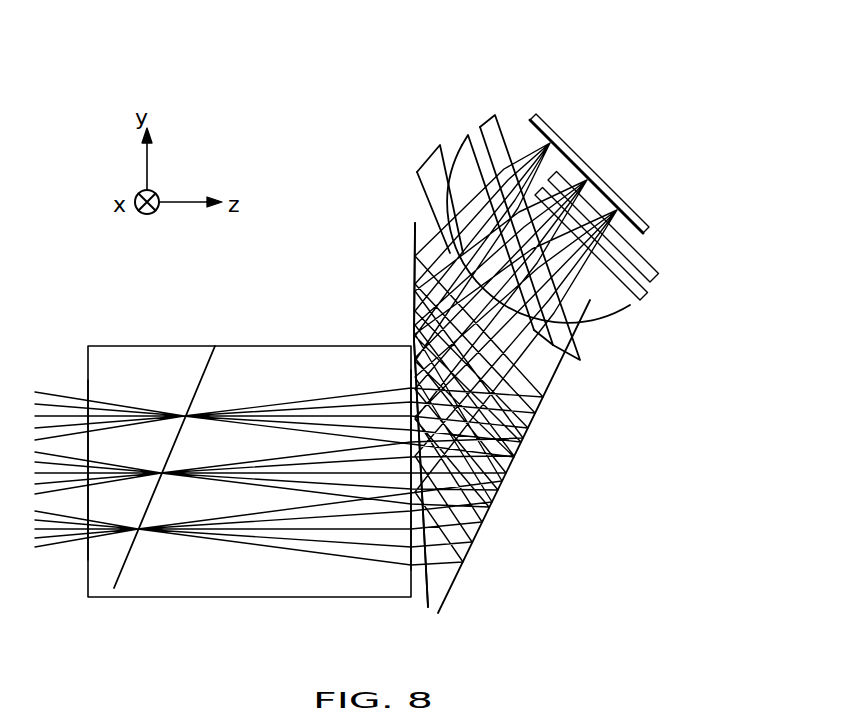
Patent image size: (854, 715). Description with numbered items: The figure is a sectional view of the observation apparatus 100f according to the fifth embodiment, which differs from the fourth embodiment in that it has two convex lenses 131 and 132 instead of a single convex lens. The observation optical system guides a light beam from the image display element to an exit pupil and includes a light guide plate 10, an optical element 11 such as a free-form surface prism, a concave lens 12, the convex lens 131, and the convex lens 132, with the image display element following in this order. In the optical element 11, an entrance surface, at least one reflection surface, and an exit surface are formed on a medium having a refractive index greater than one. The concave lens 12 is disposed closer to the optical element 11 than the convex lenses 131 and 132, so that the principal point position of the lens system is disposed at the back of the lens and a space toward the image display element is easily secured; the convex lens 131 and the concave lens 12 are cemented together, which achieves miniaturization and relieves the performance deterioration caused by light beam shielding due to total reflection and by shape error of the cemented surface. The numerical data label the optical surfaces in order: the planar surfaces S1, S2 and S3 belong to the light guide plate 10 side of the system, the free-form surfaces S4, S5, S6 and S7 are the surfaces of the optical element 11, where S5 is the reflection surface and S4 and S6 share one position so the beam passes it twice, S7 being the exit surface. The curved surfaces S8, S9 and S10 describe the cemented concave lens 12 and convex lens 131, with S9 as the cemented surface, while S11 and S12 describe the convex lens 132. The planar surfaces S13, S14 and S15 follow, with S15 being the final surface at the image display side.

The observation apparatus 100f is at (549, 230).
The light guide plate 10 is at (240, 597).
The optical element 11 is at (453, 408).
The concave lens 12 is at (507, 230).
The convex lens 131 is at (640, 287).
The convex lens 132 is at (652, 286).
The surface S1 is at (88, 392).
The surface S2 is at (215, 346).
The surface S3 is at (410, 347).
The surface S4 is at (413, 237).
The surface S5 is at (492, 513).
The surface S6 is at (421, 415).
The surface S7 is at (416, 200).
The surface S8 is at (418, 185).
The surface S9 is at (452, 150).
The surface S10 is at (468, 135).
The surface S11 is at (480, 127).
The surface S12 is at (513, 120).
The surface S13 is at (665, 318).
The surface S14 is at (647, 257).
The surface S15 is at (637, 213).